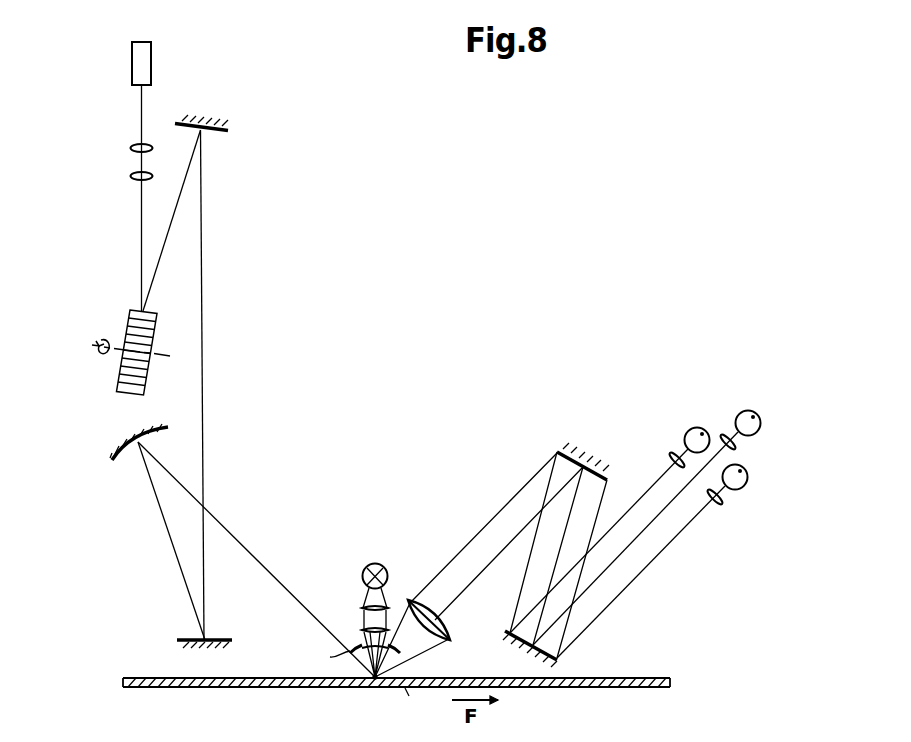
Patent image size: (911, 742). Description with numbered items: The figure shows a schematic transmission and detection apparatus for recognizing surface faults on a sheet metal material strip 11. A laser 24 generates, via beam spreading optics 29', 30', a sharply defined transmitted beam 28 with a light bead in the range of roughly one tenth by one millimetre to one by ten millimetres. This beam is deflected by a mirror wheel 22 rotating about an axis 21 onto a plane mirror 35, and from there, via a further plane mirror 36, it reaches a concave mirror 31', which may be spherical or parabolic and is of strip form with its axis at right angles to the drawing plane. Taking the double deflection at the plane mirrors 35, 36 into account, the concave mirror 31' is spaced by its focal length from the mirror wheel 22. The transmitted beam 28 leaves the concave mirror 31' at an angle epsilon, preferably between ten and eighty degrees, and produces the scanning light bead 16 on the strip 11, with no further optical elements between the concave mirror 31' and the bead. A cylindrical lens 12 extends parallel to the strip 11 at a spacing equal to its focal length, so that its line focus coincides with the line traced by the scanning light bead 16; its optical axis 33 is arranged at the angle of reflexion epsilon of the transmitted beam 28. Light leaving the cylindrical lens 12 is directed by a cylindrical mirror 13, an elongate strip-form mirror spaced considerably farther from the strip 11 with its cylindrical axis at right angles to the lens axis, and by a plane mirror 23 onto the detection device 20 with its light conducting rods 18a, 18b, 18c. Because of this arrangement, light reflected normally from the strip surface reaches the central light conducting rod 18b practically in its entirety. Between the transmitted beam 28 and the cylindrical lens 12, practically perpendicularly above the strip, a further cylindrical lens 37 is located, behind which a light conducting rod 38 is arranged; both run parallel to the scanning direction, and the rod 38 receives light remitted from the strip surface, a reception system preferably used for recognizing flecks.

The material strip 11 is at (232, 688).
The cylindrical lens 12 is at (413, 600).
The cylindrical mirror 13 is at (566, 450).
The scanning light bead 16 is at (375, 688).
The light conducting rod 18a is at (688, 432).
The central light conducting rod 18b is at (755, 434).
The light conducting rod 18c is at (738, 490).
The detection device 20 is at (714, 399).
The axis 21 is at (97, 338).
The mirror wheel 22 is at (148, 333).
The plane mirror 23 is at (550, 650).
The laser 24 is at (151, 55).
The transmitted beam 28 is at (141, 243).
The beam spreading optics 29' is at (124, 133).
The beam spreading optics 30' is at (123, 187).
The concave mirror 31' is at (136, 467).
The optical axis 33 is at (445, 642).
The plane mirror 35 is at (217, 132).
The plane mirror 36 is at (215, 640).
The cylindrical lens 37 is at (362, 608).
The light conducting rod 38 is at (375, 563).